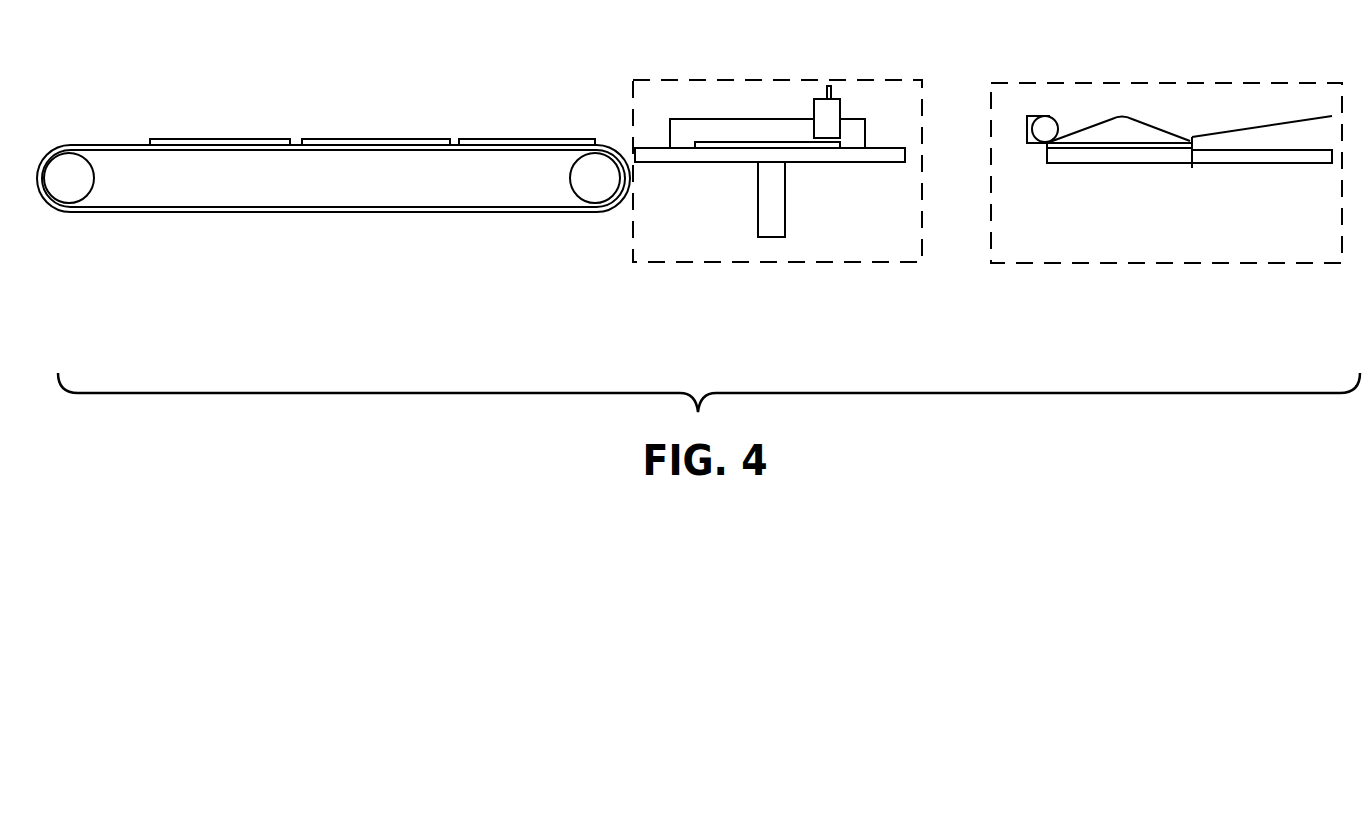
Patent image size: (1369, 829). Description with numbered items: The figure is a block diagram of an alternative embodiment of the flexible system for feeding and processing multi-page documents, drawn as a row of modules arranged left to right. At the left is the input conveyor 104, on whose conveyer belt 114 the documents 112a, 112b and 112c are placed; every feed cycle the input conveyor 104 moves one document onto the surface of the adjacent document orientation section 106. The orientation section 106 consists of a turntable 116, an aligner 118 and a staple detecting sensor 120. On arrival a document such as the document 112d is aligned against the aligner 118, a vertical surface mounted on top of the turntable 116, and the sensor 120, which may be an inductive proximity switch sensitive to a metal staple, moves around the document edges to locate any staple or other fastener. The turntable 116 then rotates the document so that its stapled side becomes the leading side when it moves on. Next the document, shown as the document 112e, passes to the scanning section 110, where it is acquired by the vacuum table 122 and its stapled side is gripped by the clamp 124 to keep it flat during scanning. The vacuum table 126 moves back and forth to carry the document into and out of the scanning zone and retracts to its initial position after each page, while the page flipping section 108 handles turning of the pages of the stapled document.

The input conveyor 104 is at (333, 220).
The orientation section 106 is at (760, 172).
The page flipping section 108 is at (1143, 171).
The scanning section 110 is at (1013, 92).
The document 112a is at (217, 138).
The document 112b is at (385, 138).
The document 112c is at (540, 138).
The document 112d is at (737, 143).
The document 112e is at (1130, 147).
The conveyer belt 114 is at (302, 153).
The turntable 116 is at (817, 153).
The aligner 118 is at (695, 118).
The staple detecting sensor 120 is at (842, 110).
The vacuum table 122 is at (1047, 163).
The clamp 124 is at (1192, 157).
The vacuum table 126 is at (1250, 163).